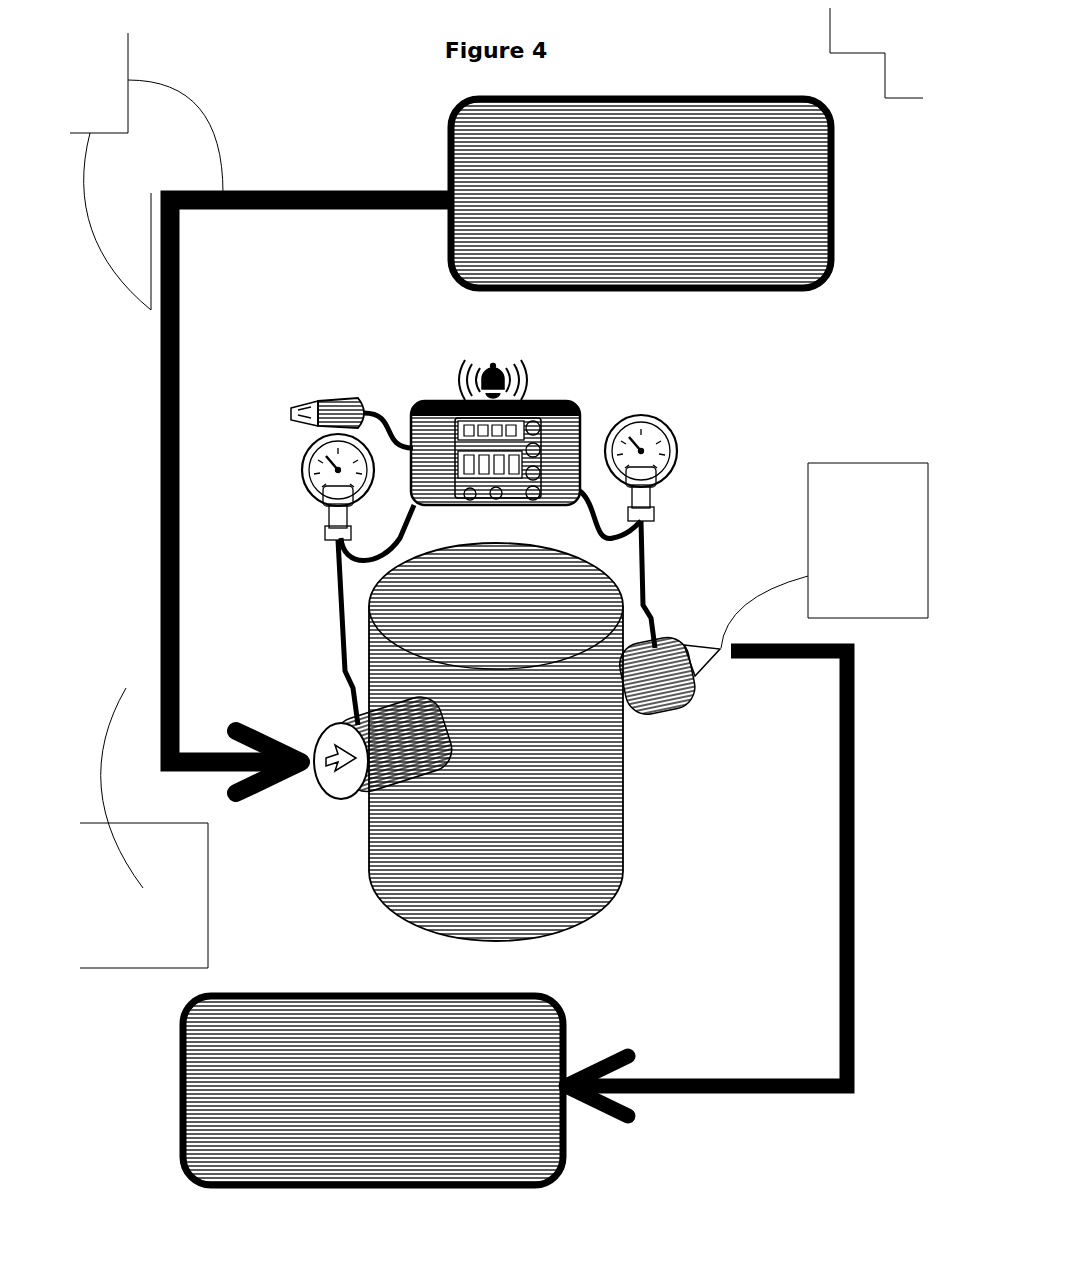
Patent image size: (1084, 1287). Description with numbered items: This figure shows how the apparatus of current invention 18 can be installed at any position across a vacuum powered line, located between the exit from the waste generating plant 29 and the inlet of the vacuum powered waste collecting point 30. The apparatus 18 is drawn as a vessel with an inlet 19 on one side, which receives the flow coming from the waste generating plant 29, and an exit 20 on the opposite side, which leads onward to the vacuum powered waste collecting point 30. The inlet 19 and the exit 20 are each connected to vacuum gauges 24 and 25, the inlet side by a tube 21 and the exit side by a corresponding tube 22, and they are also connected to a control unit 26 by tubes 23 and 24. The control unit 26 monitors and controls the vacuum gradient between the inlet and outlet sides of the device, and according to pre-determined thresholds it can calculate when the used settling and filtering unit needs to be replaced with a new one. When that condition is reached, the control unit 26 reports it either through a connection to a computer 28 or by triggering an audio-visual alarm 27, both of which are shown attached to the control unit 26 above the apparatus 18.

The apparatus of current invention 18 is at (496, 742).
The inlet 19 is at (385, 745).
The exit 20 is at (668, 676).
The tube 21 is at (337, 632).
The sensor line 22 is at (641, 584).
The tube 23 is at (380, 533).
The vacuum gauge 24 is at (458, 487).
The vacuum gauge 25 is at (653, 468).
The control unit 26 is at (495, 453).
The audio-visual alarm 27 is at (477, 380).
The computer 28 is at (352, 410).
The waste generating plant 29 is at (500, 446).
The vacuum powered waste collecting point 30 is at (515, 918).